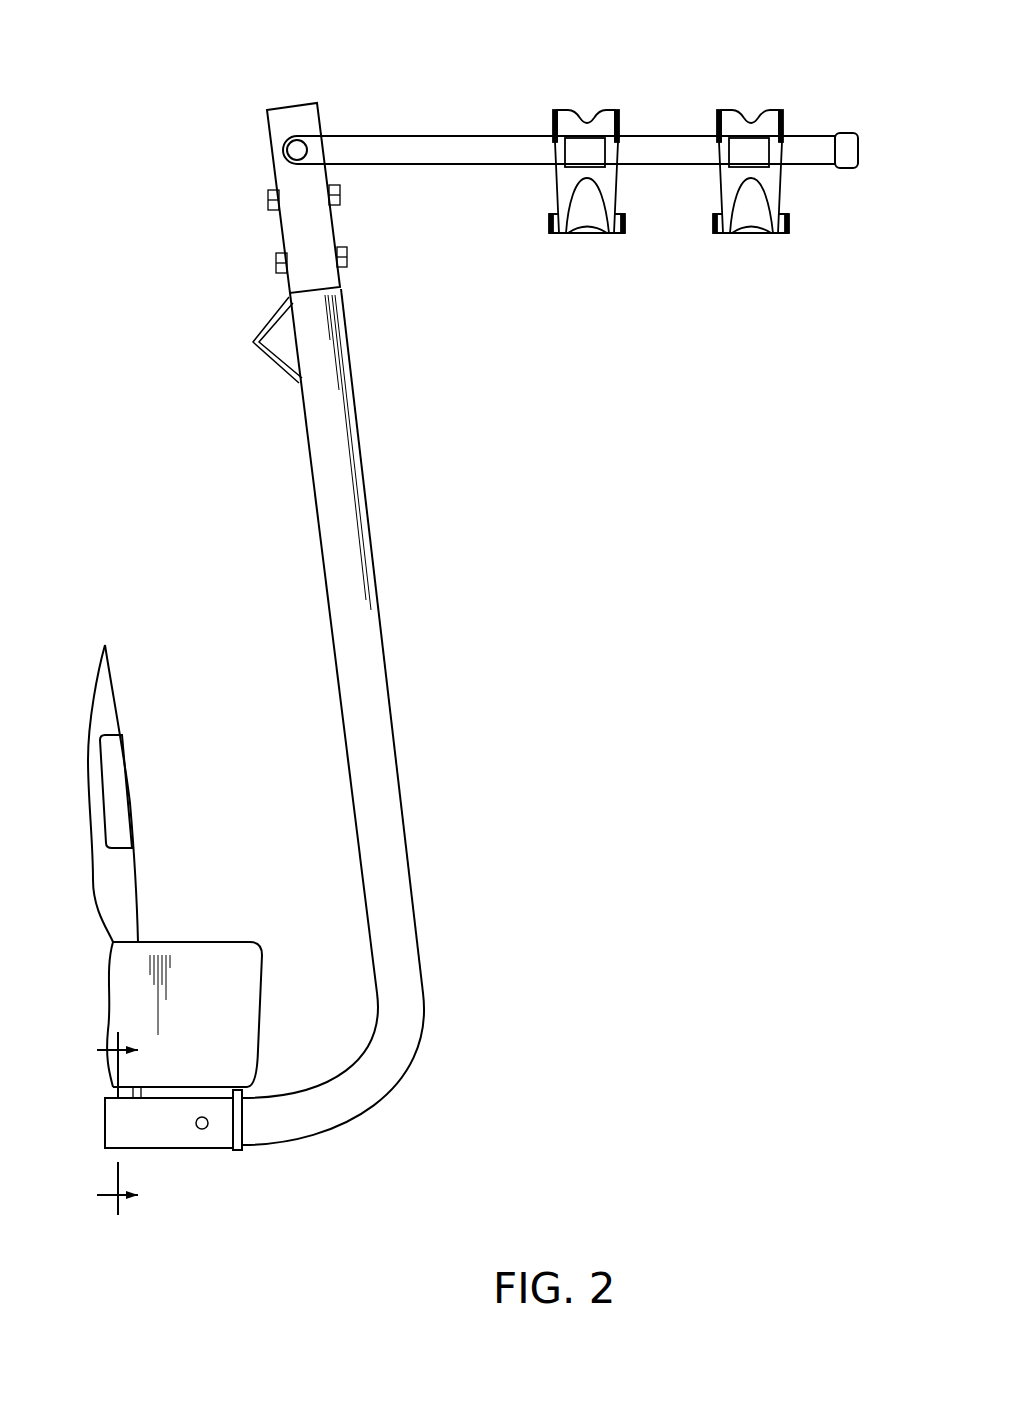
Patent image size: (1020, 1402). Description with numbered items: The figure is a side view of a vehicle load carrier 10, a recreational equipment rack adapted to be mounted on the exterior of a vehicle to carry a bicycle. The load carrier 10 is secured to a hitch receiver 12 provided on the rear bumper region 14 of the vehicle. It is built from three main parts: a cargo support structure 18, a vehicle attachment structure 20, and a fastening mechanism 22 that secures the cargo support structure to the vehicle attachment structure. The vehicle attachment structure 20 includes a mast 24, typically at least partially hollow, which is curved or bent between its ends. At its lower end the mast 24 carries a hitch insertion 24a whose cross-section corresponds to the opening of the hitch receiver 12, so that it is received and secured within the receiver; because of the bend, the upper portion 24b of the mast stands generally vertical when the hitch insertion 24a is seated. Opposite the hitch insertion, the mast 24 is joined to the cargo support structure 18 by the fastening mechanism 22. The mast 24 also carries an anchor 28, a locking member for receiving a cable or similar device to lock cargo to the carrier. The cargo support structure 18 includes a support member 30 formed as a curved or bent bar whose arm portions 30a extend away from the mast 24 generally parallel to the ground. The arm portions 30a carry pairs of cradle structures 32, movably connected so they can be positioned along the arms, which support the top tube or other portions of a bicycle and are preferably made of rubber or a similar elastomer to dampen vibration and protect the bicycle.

The vehicle load carrier 10 is at (603, 671).
The hitch receiver 12 is at (158, 1148).
The rear bumper region 14 is at (200, 905).
The cargo support structure 18 is at (668, 84).
The vehicle attachment structure 20 is at (404, 688).
The fastening mechanism 22 is at (268, 231).
The mast 24 is at (348, 762).
The hitch insertion 24a is at (174, 1132).
The upper portion 24b is at (348, 570).
The anchor 28 is at (262, 348).
The support member 30 is at (463, 132).
The arm portions 30a is at (493, 150).
The cradle structures 32 is at (607, 193).